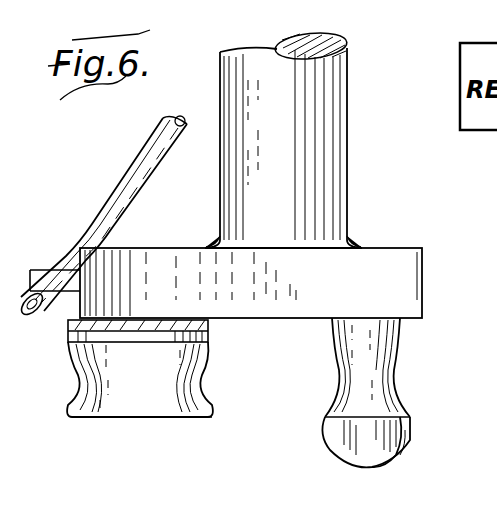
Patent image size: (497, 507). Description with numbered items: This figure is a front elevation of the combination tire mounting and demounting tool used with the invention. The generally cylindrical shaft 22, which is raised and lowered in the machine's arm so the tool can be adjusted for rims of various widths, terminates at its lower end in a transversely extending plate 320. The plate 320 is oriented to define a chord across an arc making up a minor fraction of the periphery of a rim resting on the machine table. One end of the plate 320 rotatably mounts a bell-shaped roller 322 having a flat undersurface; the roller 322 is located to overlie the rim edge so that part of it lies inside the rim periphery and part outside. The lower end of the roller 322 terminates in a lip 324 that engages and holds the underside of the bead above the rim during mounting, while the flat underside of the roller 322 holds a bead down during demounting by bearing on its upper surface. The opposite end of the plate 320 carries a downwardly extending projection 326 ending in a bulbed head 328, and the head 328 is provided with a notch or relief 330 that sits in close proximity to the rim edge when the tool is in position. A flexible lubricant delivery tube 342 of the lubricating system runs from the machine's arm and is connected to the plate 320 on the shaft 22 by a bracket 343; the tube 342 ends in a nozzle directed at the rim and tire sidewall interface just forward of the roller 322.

The shaft 22 is at (318, 122).
The plate 320 is at (388, 265).
The bell-shaped roller 322 is at (88, 358).
The lip 324 is at (85, 418).
The projection 326 is at (384, 352).
The bulbed head 328 is at (411, 443).
The relief 330 is at (350, 448).
The lubricant delivery tube 342 is at (62, 252).
The bracket 343 is at (66, 290).